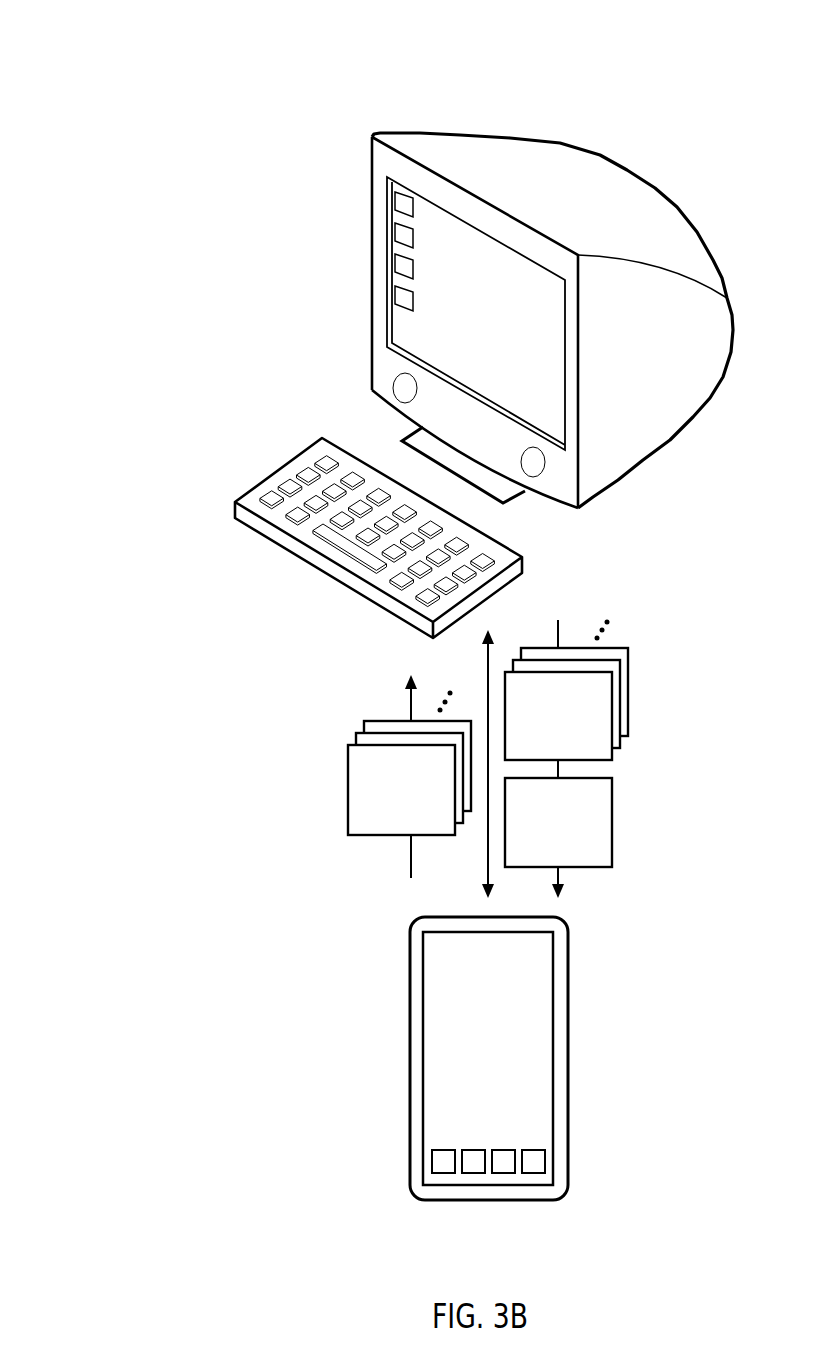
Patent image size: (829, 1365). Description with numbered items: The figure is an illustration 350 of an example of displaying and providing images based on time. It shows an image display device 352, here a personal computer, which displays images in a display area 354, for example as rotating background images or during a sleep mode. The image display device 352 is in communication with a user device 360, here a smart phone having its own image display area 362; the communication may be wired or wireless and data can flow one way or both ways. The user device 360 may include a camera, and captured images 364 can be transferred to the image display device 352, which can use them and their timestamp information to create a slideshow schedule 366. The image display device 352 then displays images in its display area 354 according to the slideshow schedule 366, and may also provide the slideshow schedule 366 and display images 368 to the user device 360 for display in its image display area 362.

The illustration 350 is at (95, 62).
The image display device 352 is at (339, 202).
The display area 354 is at (416, 338).
The user device 360 is at (407, 1058).
The image display area 362 is at (444, 1128).
The captured images 364 is at (385, 827).
The slideshow schedule 366 is at (542, 859).
The display images 368 is at (542, 754).